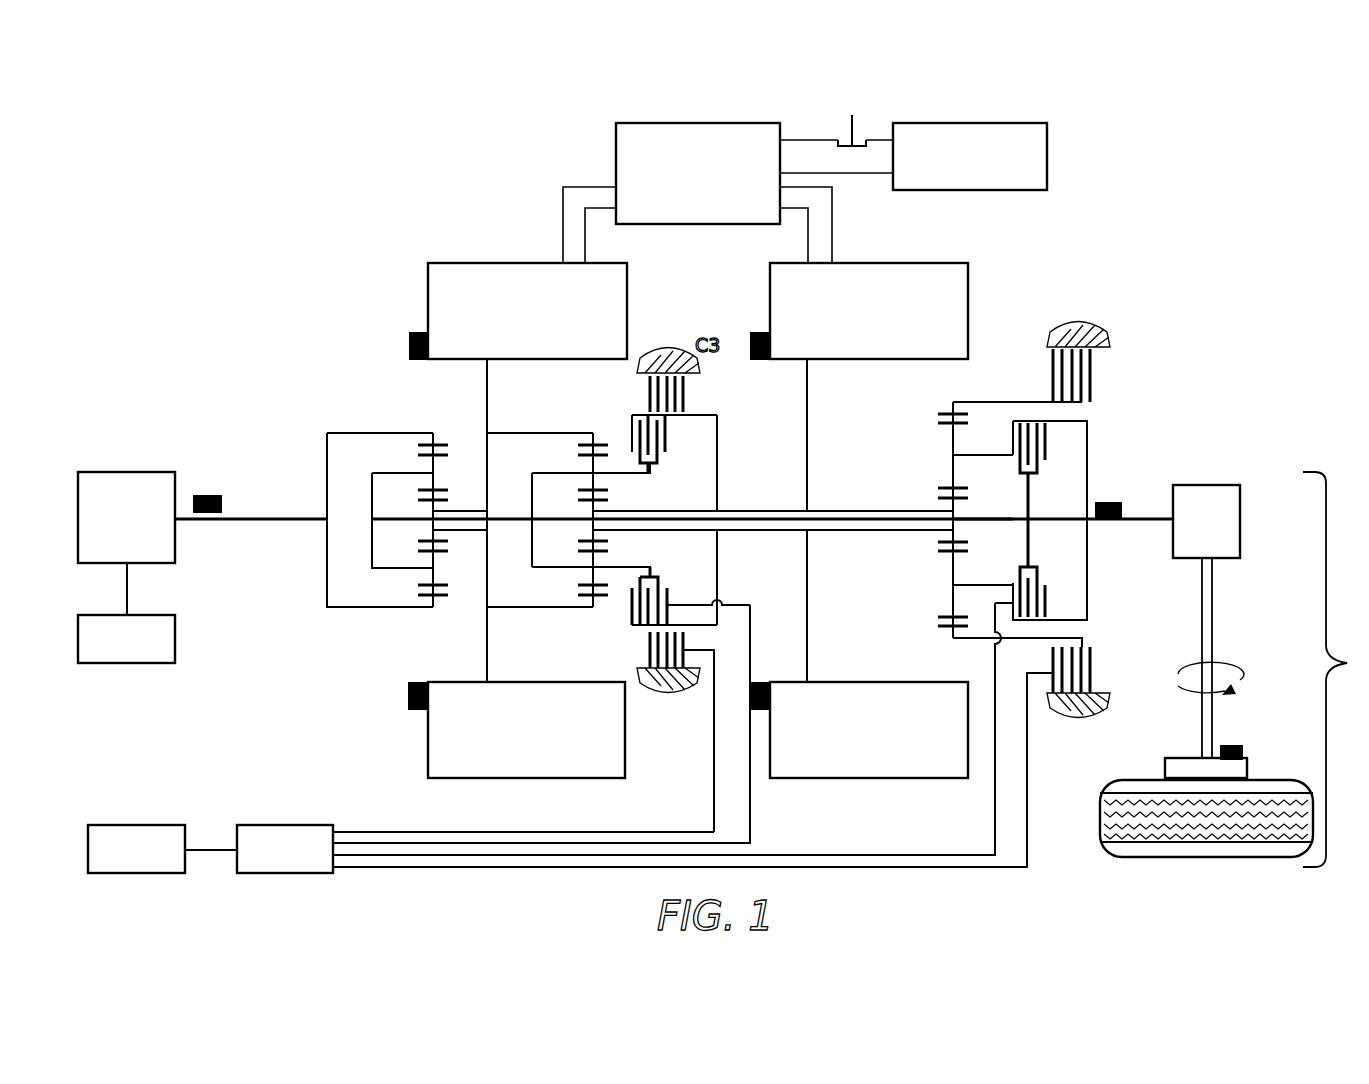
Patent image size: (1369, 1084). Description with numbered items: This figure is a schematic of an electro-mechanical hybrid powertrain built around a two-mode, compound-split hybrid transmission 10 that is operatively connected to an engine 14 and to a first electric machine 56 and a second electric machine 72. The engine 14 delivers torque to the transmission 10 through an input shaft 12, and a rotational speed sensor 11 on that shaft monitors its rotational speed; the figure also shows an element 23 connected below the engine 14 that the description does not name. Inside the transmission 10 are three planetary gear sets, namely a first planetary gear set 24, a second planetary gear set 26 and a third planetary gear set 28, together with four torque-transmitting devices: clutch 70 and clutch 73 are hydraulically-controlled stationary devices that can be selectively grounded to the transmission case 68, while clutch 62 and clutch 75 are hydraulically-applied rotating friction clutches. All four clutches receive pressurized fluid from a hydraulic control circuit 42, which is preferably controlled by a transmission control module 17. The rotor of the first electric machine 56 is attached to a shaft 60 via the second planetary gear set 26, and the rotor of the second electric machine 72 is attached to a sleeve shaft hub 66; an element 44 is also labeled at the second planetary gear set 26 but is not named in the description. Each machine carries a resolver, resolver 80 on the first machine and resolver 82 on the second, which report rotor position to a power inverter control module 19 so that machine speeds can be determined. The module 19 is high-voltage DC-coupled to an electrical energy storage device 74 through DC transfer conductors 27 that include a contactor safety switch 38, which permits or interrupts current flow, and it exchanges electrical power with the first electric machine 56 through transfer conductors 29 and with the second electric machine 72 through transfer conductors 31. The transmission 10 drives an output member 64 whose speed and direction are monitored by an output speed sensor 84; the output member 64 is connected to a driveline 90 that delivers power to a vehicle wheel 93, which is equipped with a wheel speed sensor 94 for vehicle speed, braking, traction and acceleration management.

The electro-mechanical hybrid transmission 10 is at (388, 224).
The rotational speed sensor 11 is at (207, 494).
The input shaft 12 is at (287, 517).
The engine 14 is at (131, 471).
The transmission control module 17 is at (128, 825).
The power inverter control module 19 is at (616, 140).
The engine control module (ECM) 23 is at (175, 653).
The first planetary gear set 24 is at (424, 425).
The second planetary gear set 26 is at (589, 425).
The DC transfer conductors 27 is at (797, 140).
The third planetary gear set 28 is at (943, 400).
The transfer conductors 29 is at (563, 222).
The transfer conductors 31 is at (832, 215).
The contactor safety switch 38 is at (857, 125).
The hydraulic control circuit 42 is at (253, 825).
The sleeve shaft 44 is at (530, 545).
The first electric machine 56 is at (428, 297).
The shaft 60 is at (1003, 517).
The clutch C2 62 is at (1055, 460).
The output member 64 is at (1143, 517).
The sleeve shaft hub 66 is at (848, 510).
The transmission case 68 is at (672, 348).
The clutch C1 70 is at (1040, 360).
The second electric machine 72 is at (968, 280).
The clutch C3 73 is at (692, 392).
The electrical energy storage device 74 is at (1047, 145).
The clutch C4 75 is at (674, 447).
The resolver 80 is at (408, 345).
The resolver 82 is at (757, 330).
The output speed sensor 84 is at (1109, 500).
The driveline 90 is at (1348, 662).
The vehicle wheel 93 is at (1165, 772).
The wheel speed sensor 94 is at (1236, 745).